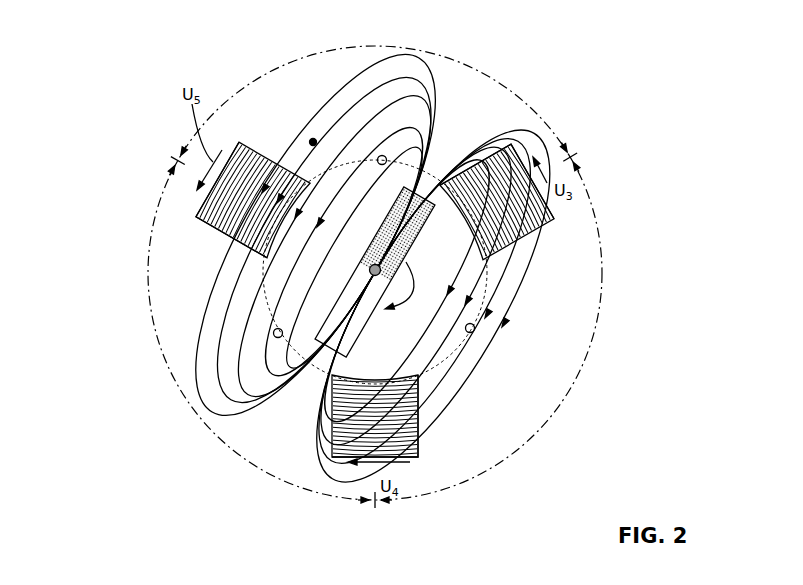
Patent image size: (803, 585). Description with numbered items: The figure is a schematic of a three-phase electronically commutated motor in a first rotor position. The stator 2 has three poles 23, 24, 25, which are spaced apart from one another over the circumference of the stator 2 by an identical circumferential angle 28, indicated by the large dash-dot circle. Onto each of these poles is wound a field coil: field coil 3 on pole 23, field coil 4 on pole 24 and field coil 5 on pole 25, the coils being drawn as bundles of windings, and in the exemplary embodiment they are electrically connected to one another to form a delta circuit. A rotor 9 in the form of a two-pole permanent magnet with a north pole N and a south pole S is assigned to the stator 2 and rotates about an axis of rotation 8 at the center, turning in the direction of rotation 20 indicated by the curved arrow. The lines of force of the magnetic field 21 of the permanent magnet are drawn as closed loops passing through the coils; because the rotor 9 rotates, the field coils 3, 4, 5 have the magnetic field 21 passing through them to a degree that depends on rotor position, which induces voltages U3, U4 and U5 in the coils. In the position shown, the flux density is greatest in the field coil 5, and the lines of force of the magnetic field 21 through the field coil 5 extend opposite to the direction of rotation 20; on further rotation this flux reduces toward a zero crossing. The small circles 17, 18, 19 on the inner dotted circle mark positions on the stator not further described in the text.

The stator 2 is at (502, 133).
The field coil 3 is at (490, 165).
The field coil 4 is at (340, 422).
The field coil 5 is at (259, 168).
The axis of rotation 8 is at (370, 267).
The rotor 9 is at (330, 310).
The reference point on rotor circle 17 is at (386, 156).
The reference point on rotor circle 18 is at (475, 332).
The reference point on rotor circle 19 is at (279, 338).
The direction of rotation 20 is at (427, 287).
The magnetic field 21 is at (314, 139).
The pole 23 is at (533, 237).
The pole 24 is at (405, 427).
The pole 25 is at (227, 233).
The circumferential angle 28 is at (484, 74).